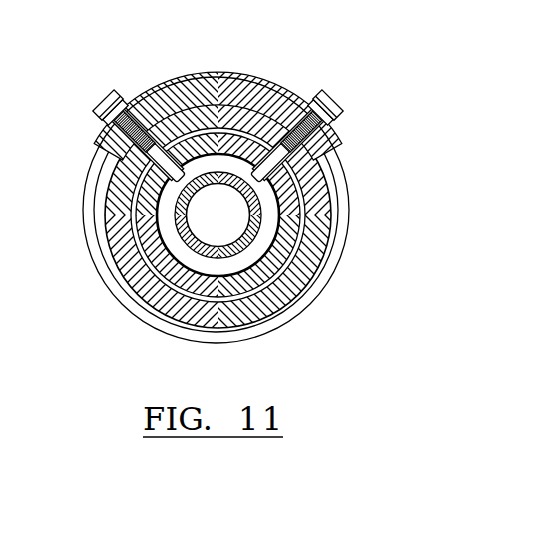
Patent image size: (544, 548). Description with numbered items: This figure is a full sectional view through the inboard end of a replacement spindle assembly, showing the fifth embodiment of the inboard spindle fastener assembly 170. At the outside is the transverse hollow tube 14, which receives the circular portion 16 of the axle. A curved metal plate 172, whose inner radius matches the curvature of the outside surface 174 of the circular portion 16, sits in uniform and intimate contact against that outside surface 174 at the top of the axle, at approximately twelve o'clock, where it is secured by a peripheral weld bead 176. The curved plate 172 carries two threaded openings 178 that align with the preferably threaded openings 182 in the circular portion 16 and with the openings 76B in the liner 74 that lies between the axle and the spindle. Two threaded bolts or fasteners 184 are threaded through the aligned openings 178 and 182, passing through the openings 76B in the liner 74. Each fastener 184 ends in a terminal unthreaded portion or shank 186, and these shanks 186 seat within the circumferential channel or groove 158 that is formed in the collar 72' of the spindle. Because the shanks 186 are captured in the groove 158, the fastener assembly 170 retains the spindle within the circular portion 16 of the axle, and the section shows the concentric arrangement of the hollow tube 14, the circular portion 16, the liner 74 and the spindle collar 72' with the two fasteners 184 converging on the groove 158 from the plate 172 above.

The inboard spindle fastener assembly 170 is at (354, 72).
The curved metal plate 172 is at (229, 80).
The outside surface 174 is at (160, 317).
The threaded bolts or fasteners 184 is at (98, 119).
The threaded openings 182 is at (97, 150).
The threaded openings 178 is at (328, 158).
The peripheral weld bead 176 is at (113, 163).
The terminal unthreaded portions or shanks 186 is at (174, 175).
The openings in the liner 76B is at (306, 177).
The transverse hollow tube 14 is at (340, 233).
The circular portion 16 is at (297, 289).
The collar 72' is at (296, 221).
The circumferential channel or groove 158 is at (183, 256).
The liner 74 is at (218, 290).